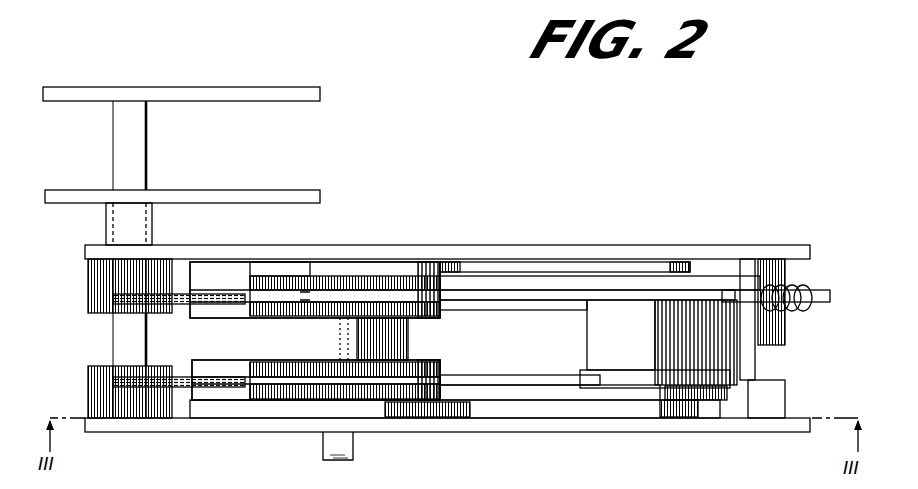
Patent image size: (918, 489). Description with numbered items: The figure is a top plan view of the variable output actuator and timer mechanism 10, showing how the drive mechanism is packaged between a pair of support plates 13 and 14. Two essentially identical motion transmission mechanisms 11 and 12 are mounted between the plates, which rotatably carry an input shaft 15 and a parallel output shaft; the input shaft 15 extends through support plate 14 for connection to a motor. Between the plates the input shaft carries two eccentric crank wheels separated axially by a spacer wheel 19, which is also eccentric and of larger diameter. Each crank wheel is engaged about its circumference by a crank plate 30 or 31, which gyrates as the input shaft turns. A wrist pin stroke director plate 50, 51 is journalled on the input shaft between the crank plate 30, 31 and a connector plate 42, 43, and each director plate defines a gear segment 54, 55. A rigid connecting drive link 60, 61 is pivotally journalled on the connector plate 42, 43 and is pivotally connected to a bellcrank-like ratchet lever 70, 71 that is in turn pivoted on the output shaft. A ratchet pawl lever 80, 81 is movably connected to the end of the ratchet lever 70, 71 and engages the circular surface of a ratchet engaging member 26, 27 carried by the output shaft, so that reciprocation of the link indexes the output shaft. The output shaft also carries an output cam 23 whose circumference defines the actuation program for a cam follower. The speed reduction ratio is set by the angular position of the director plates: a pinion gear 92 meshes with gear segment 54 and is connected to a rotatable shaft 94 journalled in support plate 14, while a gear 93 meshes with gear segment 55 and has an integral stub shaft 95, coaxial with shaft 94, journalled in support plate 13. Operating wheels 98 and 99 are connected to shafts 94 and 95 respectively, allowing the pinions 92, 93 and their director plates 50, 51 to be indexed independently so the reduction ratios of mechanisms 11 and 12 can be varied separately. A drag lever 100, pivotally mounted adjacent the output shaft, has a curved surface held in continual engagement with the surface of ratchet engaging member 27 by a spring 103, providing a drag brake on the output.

The variable output actuator and timer mechanism 10 is at (379, 243).
The motion transmission mechanism 11 is at (448, 368).
The motion transmission mechanism 12 is at (450, 312).
The support plate 13 is at (222, 256).
The support plate 14 is at (152, 425).
The input shaft 15 is at (330, 440).
The spacer wheel 19 is at (372, 335).
The output cam 23 is at (585, 328).
The ratchet engaging member 26 is at (660, 380).
The ratchet engaging member 27 is at (715, 300).
The crank plate 30 is at (417, 400).
The crank plate 31 is at (413, 298).
The connector plate 42 is at (285, 358).
The connector plate 43 is at (277, 270).
The wrist pin stroke director plate 50 is at (385, 400).
The wrist pin stroke director plate 51 is at (388, 282).
The gear segment 54 is at (185, 365).
The gear segment 55 is at (183, 305).
The connecting drive link 60 is at (536, 406).
The connecting drive link 61 is at (538, 265).
The ratchet lever 70 is at (620, 386).
The ratchet lever 71 is at (680, 290).
The ratchet pawl lever 80 is at (535, 372).
The ratchet pawl lever 81 is at (505, 290).
The pinion gear 92 is at (88, 392).
The gear 93 is at (88, 296).
The rotatable shaft 94 is at (130, 144).
The stub shaft 95 is at (135, 222).
The operating wheel 98 is at (252, 90).
The operating wheel 99 is at (250, 188).
The drag lever 100 is at (802, 312).
The spring 103 is at (790, 287).